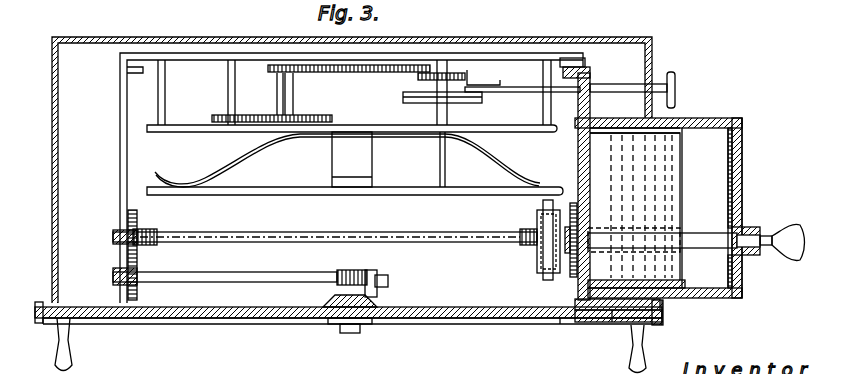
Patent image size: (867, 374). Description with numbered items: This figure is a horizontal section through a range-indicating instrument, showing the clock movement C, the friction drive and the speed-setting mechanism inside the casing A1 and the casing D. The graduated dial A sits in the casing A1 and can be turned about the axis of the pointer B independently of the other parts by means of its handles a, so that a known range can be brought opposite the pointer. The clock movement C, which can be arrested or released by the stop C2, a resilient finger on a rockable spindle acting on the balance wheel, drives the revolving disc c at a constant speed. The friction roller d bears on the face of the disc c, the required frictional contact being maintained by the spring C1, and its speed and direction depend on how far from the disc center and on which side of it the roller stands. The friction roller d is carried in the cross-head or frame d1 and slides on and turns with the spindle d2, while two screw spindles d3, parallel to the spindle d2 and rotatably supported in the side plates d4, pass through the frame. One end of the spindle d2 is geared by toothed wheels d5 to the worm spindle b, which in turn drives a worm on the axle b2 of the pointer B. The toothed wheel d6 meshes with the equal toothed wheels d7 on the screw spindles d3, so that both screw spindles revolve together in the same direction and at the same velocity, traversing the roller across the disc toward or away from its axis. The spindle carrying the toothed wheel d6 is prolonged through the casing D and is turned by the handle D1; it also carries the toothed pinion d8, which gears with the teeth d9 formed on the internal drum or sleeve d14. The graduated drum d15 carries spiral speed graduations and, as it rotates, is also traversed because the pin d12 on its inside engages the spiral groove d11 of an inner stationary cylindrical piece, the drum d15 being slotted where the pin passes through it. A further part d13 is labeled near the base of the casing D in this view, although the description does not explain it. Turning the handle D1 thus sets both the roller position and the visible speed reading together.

The graduated dial A is at (228, 316).
The casing of the instrument A1 is at (652, 62).
The handles a is at (65, 340).
The pointer B is at (365, 330).
The worm spindle b is at (295, 274).
The axle of the pointer b2 is at (332, 276).
The clock movement C is at (396, 93).
The revolving disc c is at (405, 190).
The spring C1 is at (213, 175).
The stop C2 is at (675, 92).
The casing D is at (668, 208).
The handle D1 is at (785, 234).
The friction roller d is at (545, 204).
The cross-head or frame d1 is at (540, 263).
The spindle d2 is at (470, 243).
The screw spindles d3 is at (405, 243).
The frames or side plates d4 is at (123, 136).
The toothed wheels d5 is at (128, 268).
The toothed wheel d6 is at (560, 262).
The toothed wheels d7 is at (585, 216).
The toothed pinion d8 is at (745, 228).
The teeth d9 is at (745, 140).
The spiral groove or slot d11 is at (590, 80).
The pin d12 is at (563, 319).
The base fastening d13 is at (625, 321).
The internal drum or sleeve d14 is at (720, 125).
The graduated drum d15 is at (675, 125).